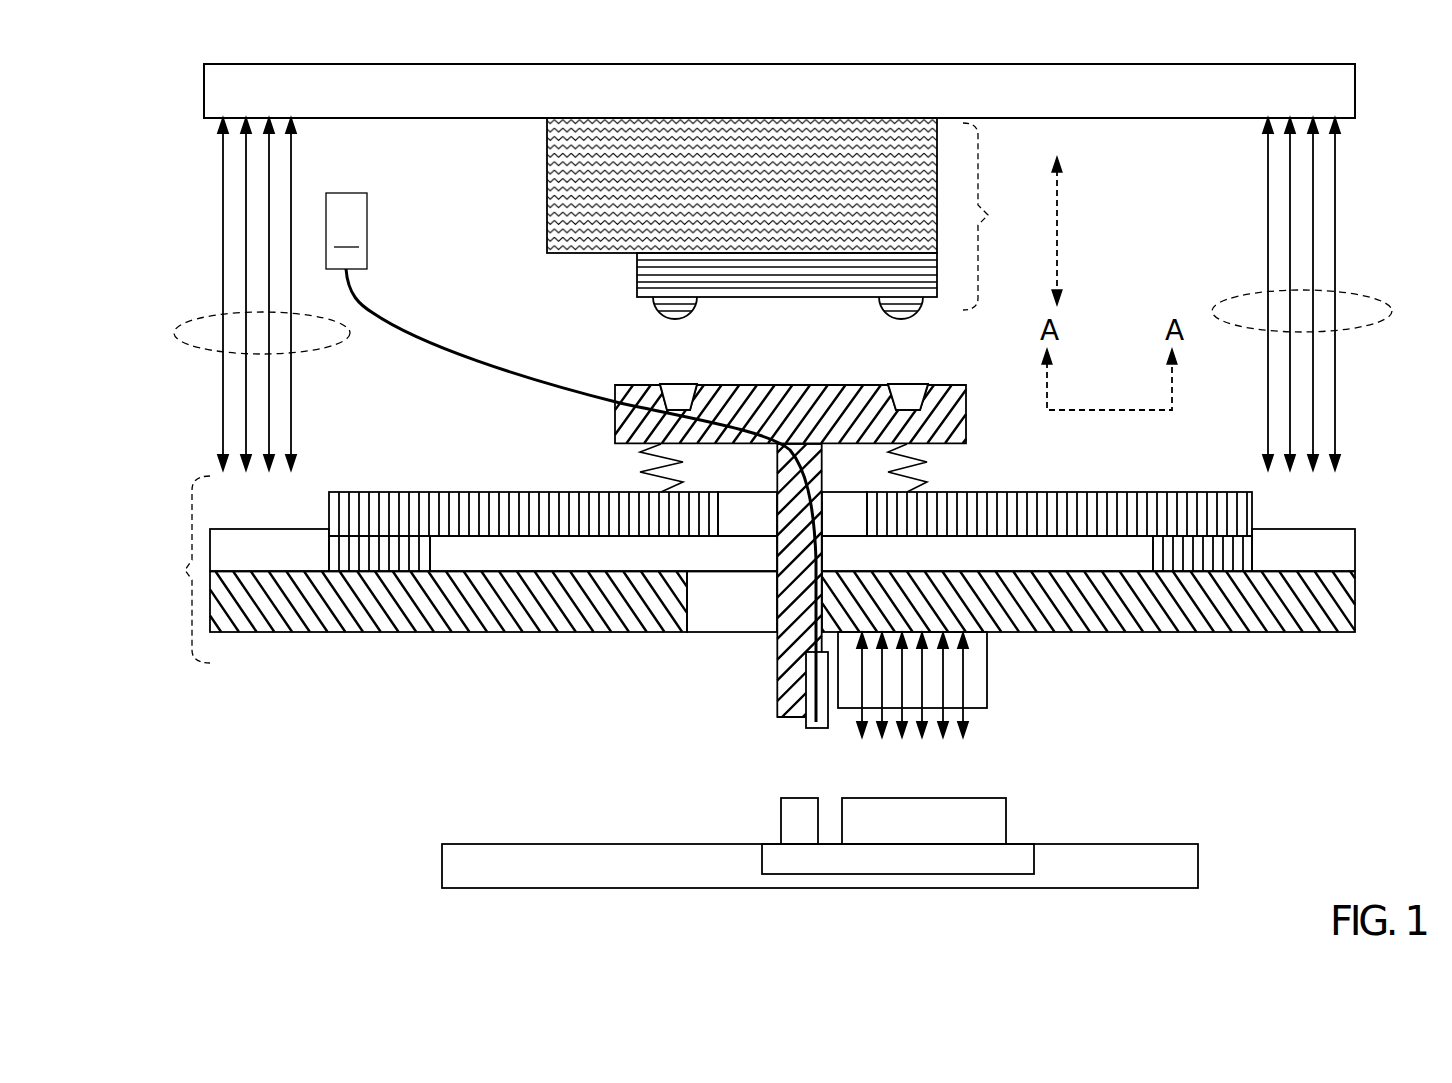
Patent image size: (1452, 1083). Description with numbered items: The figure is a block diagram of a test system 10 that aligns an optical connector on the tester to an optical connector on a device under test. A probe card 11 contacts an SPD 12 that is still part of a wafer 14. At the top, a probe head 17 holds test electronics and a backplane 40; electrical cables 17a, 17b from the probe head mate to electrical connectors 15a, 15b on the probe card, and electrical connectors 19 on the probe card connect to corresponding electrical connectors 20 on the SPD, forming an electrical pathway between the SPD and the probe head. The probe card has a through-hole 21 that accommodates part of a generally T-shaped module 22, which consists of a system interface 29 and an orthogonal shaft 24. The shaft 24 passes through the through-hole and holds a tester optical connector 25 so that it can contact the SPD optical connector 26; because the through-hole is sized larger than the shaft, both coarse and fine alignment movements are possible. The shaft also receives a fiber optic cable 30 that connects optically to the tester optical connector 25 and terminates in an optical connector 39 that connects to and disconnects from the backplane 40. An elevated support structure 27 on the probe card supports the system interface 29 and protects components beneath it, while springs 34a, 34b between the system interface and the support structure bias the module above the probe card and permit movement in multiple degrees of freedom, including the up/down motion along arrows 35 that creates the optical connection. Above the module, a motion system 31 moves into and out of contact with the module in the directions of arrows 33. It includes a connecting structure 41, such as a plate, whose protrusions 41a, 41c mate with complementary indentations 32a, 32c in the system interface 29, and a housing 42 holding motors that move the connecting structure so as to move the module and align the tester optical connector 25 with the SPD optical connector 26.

The test system 10 is at (140, 108).
The probe card 11 is at (764, 550).
The SPD 12 is at (985, 865).
The wafer 14 is at (450, 850).
The electrical connector 15a is at (300, 550).
The electrical connector 15b is at (1348, 560).
The probe head 17 is at (920, 80).
The electrical cable 17a is at (1350, 297).
The electrical cable 17b is at (200, 318).
The electrical connector 19 is at (990, 690).
The electrical connector 20 is at (993, 822).
The through-hole 21 is at (751, 612).
The module 22 is at (985, 375).
The shaft 24 is at (797, 712).
The tester optical connector 25 is at (823, 712).
The SPD optical connector 26 is at (798, 830).
The support structure 27 is at (1035, 510).
The system interface 29 is at (633, 388).
The fiber optic cable 30 is at (465, 360).
The motion system 31 is at (760, 228).
The indentation 32a is at (668, 397).
The indentation 32c is at (915, 390).
The arrows 33 is at (1062, 238).
The spring 34a is at (930, 480).
The spring 34b is at (645, 488).
The arrows 35 is at (965, 725).
The optical connector 39 is at (346, 231).
The backplane 40 is at (410, 118).
The connecting structure 41 is at (637, 265).
The protrusion 41a is at (690, 310).
The protrusion 41c is at (886, 310).
The housing 42 is at (555, 230).